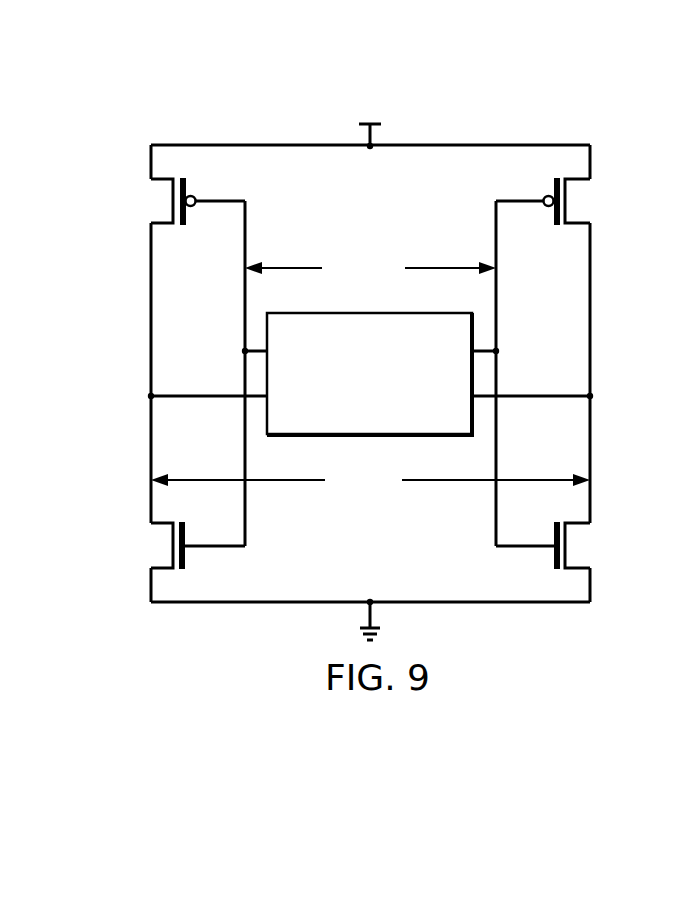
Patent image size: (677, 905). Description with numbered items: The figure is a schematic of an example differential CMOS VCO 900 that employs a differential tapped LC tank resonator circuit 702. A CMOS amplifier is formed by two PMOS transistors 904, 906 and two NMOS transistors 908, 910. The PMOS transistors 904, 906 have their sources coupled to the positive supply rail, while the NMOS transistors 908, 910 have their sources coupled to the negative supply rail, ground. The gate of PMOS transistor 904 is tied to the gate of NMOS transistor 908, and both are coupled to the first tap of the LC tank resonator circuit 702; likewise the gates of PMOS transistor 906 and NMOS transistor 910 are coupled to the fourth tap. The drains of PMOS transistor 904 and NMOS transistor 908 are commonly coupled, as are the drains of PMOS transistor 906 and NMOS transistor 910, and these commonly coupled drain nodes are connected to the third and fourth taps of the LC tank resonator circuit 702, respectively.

The differential CMOS VCO 900 is at (317, 86).
The PMOS transistor 904 is at (186, 190).
The PMOS transistor 906 is at (553, 190).
The NMOS transistor 908 is at (186, 557).
The NMOS transistor 910 is at (553, 557).
The LC tank resonator circuit 702 is at (369, 374).